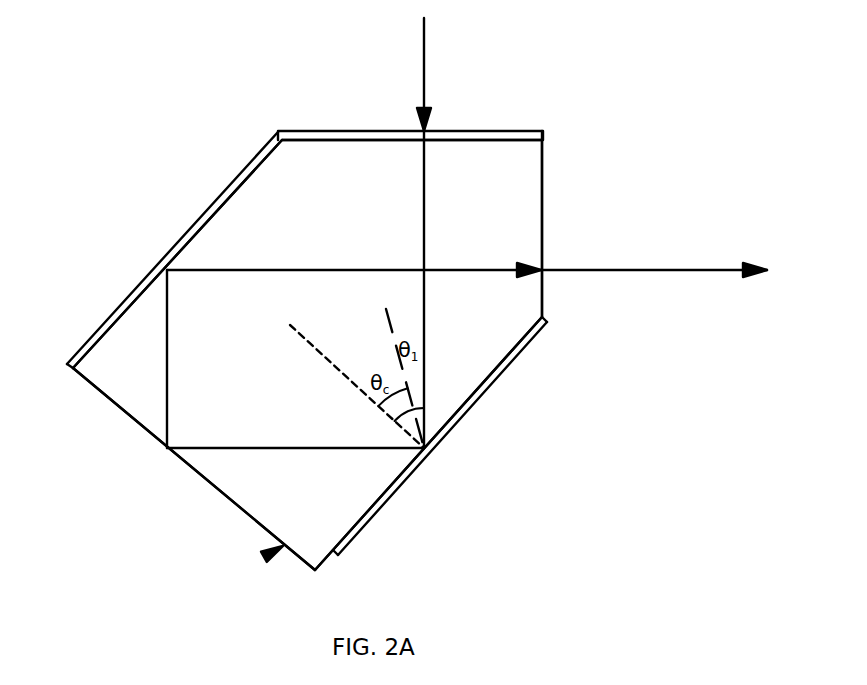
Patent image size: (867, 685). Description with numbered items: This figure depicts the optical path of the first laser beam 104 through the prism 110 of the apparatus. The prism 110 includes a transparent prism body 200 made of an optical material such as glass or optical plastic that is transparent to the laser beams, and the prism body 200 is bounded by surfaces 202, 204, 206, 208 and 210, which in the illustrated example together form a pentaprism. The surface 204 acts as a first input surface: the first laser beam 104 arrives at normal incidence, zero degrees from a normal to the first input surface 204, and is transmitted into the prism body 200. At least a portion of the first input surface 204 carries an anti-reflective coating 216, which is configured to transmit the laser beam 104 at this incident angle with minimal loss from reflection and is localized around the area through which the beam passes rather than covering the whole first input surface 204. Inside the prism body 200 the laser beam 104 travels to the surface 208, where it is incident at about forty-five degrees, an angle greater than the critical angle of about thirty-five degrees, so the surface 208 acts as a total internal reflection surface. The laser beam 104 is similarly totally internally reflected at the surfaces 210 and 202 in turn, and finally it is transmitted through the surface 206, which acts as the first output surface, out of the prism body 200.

The first laser beam 104 is at (424, 58).
The prism 110 is at (264, 557).
The transparent prism body 200 is at (250, 198).
The surface 202 is at (157, 273).
The first input surface 204 is at (512, 140).
The first output surface 206 is at (544, 228).
The total internal reflection surface 208 is at (379, 499).
The surface 210 is at (135, 422).
The anti-reflective coating 216 is at (493, 131).